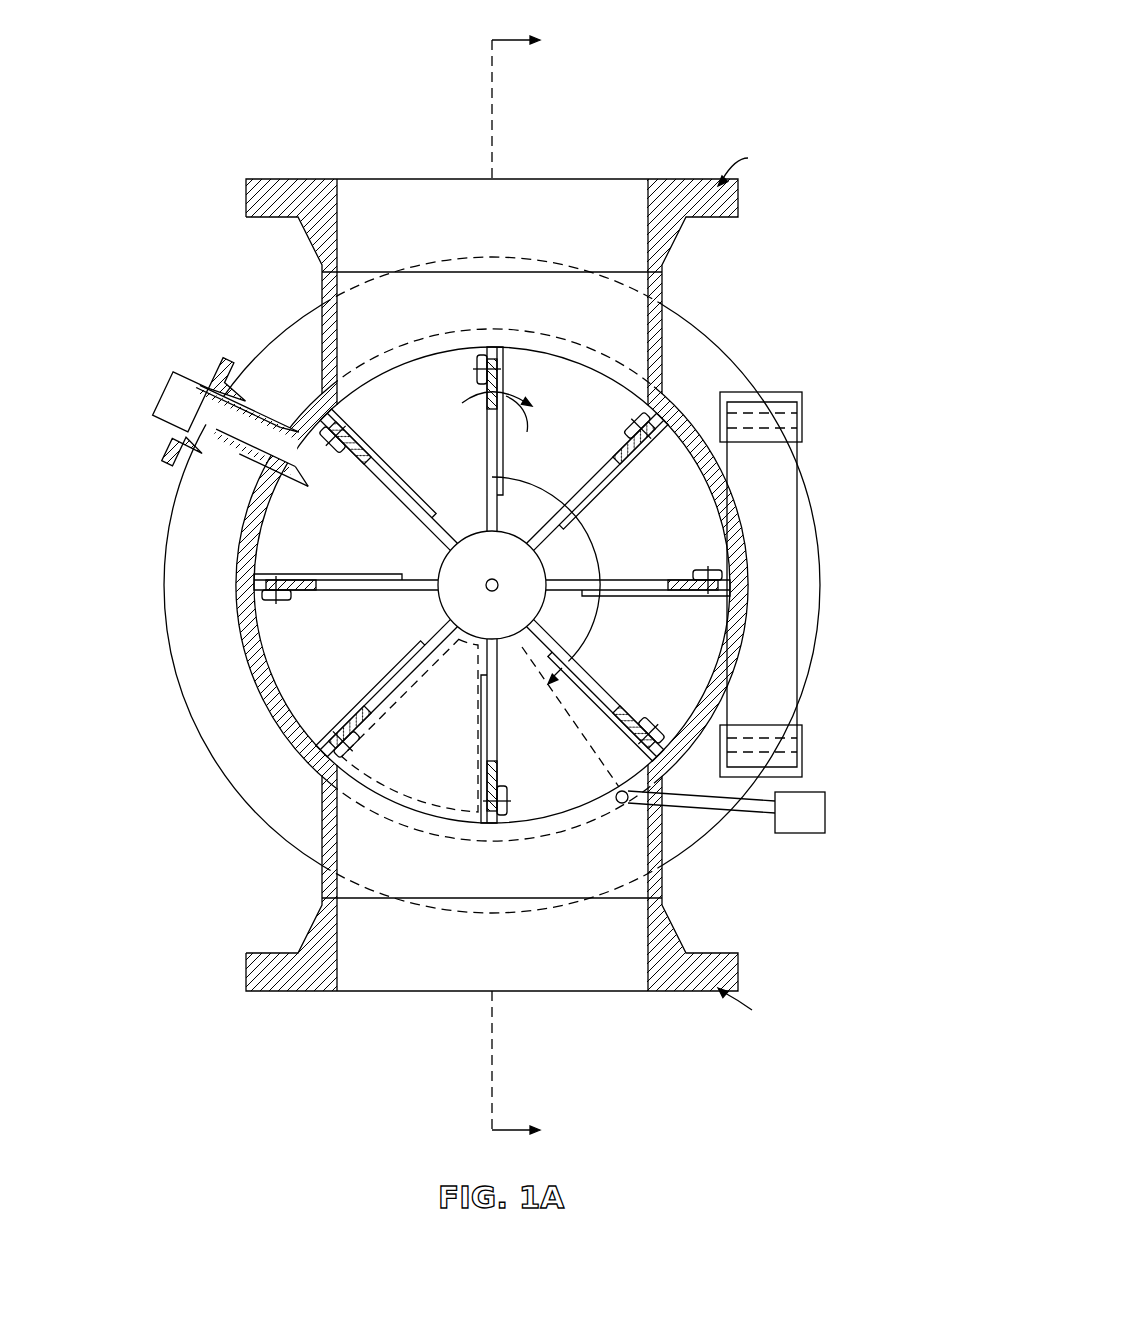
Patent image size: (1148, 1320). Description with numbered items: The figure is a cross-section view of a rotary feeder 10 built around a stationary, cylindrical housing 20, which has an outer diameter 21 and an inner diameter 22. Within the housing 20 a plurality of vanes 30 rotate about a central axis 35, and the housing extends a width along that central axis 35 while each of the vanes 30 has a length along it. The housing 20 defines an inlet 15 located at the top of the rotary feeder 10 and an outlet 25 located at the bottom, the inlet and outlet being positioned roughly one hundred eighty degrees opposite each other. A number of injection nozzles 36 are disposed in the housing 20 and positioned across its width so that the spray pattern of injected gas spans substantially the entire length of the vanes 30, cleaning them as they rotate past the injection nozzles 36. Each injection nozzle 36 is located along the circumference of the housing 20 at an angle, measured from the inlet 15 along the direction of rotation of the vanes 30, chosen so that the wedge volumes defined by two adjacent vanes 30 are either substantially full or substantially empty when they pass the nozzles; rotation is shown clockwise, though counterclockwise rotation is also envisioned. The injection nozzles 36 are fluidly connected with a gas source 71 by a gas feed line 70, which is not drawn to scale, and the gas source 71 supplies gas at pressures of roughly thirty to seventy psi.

The rotary feeder 10 is at (502, 585).
The inlet 15 is at (611, 169).
The cylindrical housing 20 is at (469, 585).
The outer diameter 21 is at (268, 824).
The inner diameter 22 is at (266, 690).
The outlet 25 is at (600, 1006).
The vanes 30 is at (368, 480).
The central axis 35 is at (486, 588).
The injection nozzles 36 is at (621, 804).
The gas feed line 70 is at (736, 821).
The gas source 71 is at (825, 812).